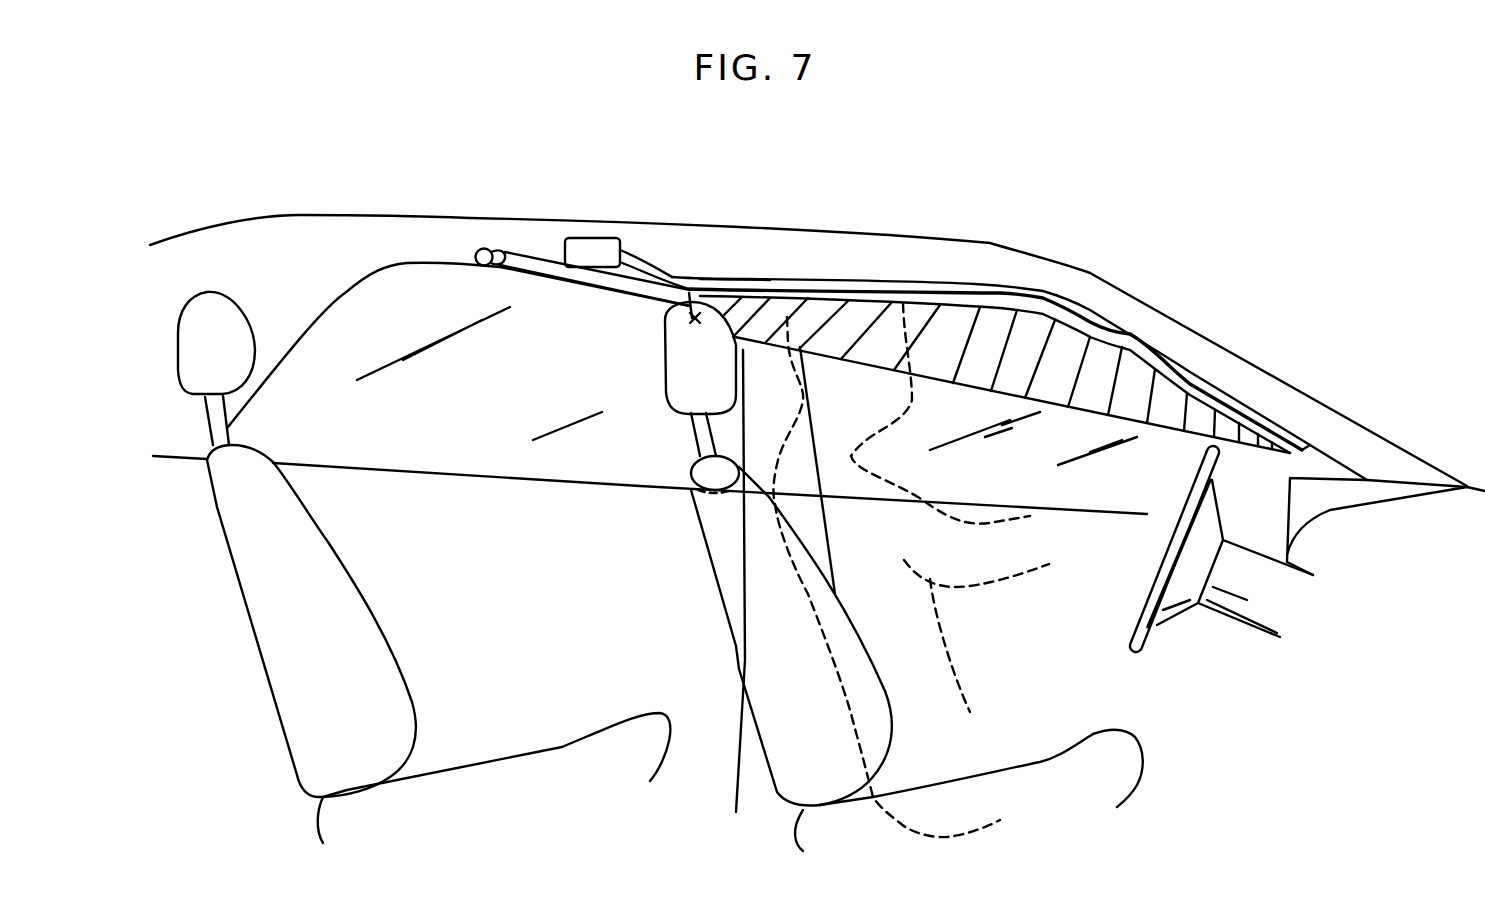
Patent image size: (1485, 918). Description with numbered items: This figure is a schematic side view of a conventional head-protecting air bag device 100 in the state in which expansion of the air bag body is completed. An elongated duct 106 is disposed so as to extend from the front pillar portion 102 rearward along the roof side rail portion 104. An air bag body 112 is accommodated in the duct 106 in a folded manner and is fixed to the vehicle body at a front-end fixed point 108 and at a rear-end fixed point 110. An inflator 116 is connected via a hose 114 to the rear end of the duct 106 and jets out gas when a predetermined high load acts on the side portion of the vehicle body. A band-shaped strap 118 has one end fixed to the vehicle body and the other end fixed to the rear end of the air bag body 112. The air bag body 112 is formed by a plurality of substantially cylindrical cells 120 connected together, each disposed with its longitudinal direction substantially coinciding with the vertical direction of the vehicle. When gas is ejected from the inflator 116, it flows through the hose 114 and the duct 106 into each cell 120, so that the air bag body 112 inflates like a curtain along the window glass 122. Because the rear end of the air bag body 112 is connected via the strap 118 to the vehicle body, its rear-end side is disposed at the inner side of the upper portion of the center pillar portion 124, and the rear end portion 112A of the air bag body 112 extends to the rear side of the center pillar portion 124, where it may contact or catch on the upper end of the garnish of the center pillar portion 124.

The head-protecting air bag device 100 is at (1141, 268).
The front pillar portion 102 is at (1233, 356).
The roof side rail portion 104 is at (867, 257).
The duct 106 is at (735, 280).
The front-end fixed point 108 is at (1311, 445).
The rear-end fixed point 110 is at (748, 280).
The air bag body 112 is at (1048, 308).
The rear end portion 112A is at (732, 337).
The hose 114 is at (665, 273).
The inflator 116 is at (593, 247).
The strap 118 is at (513, 257).
The cells 120 is at (978, 327).
The window glass 122 is at (1067, 484).
The center pillar portion 124 is at (760, 407).